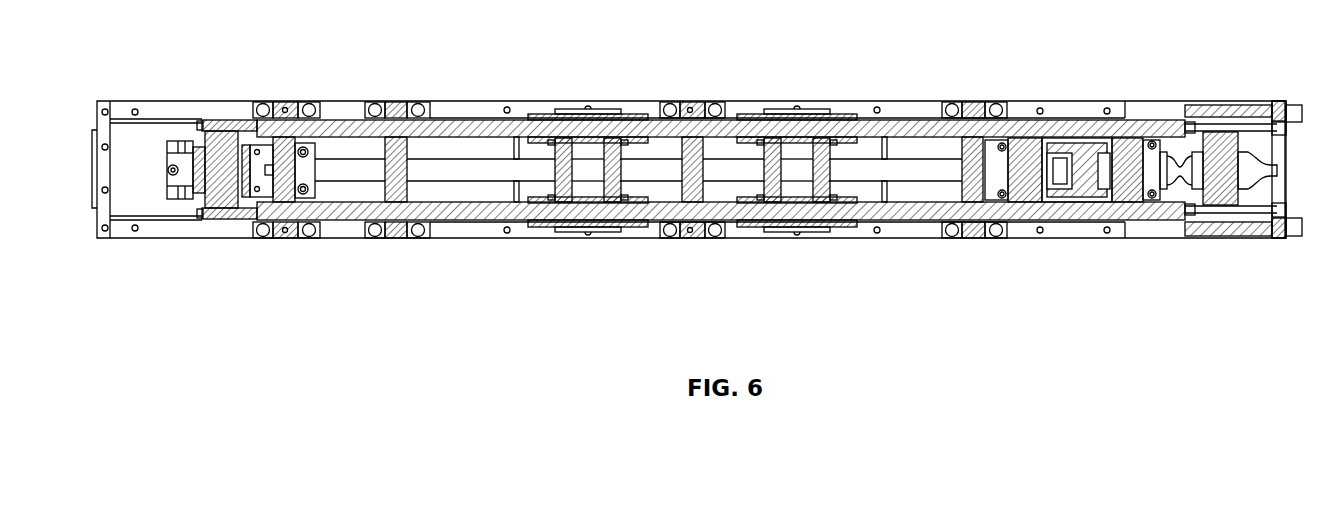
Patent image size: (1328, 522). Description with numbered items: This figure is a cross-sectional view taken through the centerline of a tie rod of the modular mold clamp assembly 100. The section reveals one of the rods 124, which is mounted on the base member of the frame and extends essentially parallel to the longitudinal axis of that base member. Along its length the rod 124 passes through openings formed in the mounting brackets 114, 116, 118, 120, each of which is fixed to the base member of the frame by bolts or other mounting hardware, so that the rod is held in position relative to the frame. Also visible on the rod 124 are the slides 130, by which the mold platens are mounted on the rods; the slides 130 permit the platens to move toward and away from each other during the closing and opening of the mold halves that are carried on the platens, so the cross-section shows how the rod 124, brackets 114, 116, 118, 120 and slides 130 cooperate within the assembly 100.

The modular mold clamp assembly 100 is at (240, 36).
The mounting bracket 114 is at (285, 195).
The mounting bracket 116 is at (395, 195).
The mounting bracket 118 is at (688, 236).
The mounting bracket 120 is at (968, 108).
The rod 124 is at (458, 126).
The slide 130 is at (593, 143).